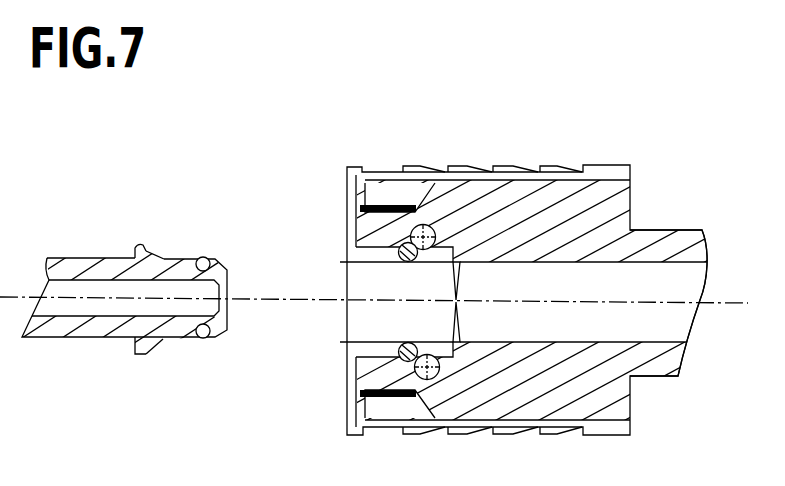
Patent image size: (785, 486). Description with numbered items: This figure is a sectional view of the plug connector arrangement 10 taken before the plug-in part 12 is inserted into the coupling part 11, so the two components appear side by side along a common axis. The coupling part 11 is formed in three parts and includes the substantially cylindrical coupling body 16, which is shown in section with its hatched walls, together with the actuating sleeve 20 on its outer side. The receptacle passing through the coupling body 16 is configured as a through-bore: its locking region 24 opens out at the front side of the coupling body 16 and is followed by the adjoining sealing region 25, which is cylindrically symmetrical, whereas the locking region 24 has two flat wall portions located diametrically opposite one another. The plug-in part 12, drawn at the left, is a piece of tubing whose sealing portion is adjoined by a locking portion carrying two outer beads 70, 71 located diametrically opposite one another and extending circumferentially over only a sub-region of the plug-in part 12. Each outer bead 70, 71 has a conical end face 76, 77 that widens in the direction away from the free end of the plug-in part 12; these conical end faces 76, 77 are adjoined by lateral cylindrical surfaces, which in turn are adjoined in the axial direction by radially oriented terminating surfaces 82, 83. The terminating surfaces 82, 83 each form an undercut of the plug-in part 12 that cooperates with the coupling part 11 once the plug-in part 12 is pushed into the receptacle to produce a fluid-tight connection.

The plug connector arrangement 10 is at (392, 248).
The coupling part 11 is at (441, 108).
The plug-in part 12 is at (28, 385).
The coupling body 16 is at (660, 193).
The actuating sleeve 20 is at (527, 133).
The locking region 24 is at (368, 357).
The sealing region 25 is at (620, 343).
The outer bead 70 is at (119, 210).
The outer bead 71 is at (138, 395).
The conical end face 76 is at (158, 257).
The conical end face 77 is at (163, 341).
The terminating surface 82 is at (134, 250).
The terminating surface 83 is at (134, 351).